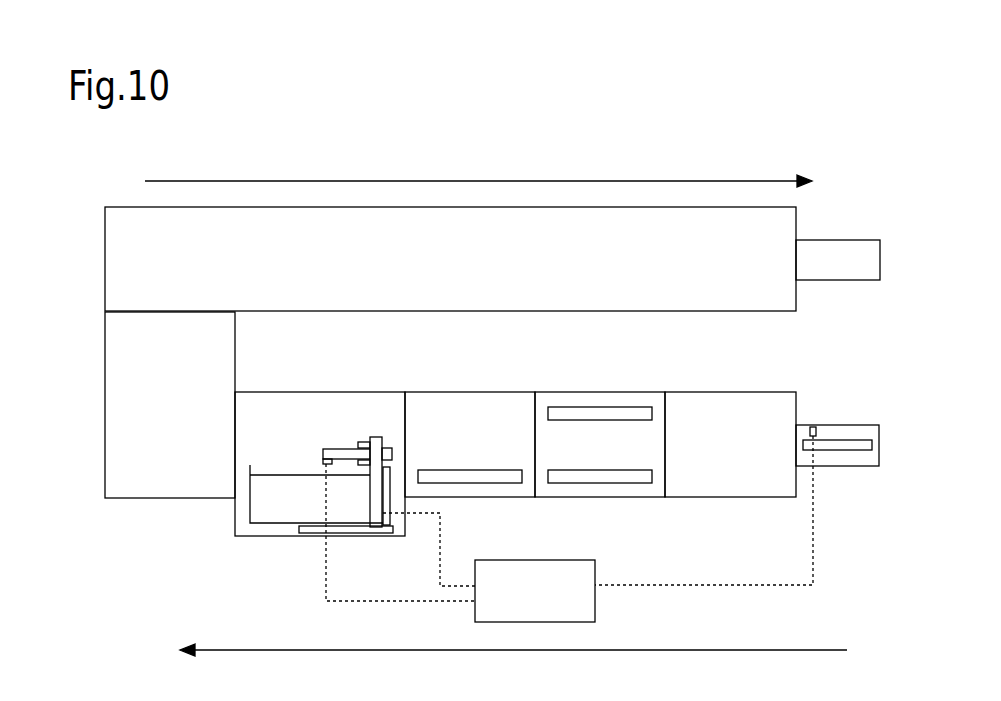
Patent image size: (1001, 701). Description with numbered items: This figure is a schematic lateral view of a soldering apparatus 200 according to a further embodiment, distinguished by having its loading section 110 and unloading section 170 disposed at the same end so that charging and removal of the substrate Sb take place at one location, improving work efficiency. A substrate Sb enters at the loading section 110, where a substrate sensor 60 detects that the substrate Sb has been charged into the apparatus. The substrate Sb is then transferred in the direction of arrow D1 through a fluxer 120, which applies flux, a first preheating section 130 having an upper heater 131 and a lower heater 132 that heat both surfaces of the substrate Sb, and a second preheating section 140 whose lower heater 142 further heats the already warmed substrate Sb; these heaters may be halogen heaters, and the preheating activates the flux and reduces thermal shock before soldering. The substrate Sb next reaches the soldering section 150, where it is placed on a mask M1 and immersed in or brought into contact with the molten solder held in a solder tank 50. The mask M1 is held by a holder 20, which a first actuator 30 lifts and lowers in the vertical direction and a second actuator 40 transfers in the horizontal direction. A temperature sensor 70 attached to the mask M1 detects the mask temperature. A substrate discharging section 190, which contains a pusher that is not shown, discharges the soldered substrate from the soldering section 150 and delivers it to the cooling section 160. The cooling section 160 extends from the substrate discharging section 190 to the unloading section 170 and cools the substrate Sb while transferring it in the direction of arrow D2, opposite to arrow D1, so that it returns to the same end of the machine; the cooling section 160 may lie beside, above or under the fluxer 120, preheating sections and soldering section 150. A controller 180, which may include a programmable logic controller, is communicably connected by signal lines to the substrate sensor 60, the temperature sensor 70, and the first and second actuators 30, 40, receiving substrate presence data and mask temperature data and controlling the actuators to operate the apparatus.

The soldering apparatus 200 is at (795, 147).
The cooling section 160 is at (105, 257).
The unloading section 170 is at (835, 240).
The substrate discharging section 190 is at (105, 436).
The soldering section 150 is at (318, 392).
The second preheating section 140 is at (467, 392).
The first preheating section 130 is at (597, 392).
The fluxer 120 is at (728, 392).
The upper heater 131 is at (640, 413).
The lower heater 132 is at (642, 482).
The lower heater 142 is at (510, 482).
The loading section 110 is at (835, 425).
The substrate sensor 60 is at (813, 427).
The controller 180 is at (597, 612).
The holder 20 is at (372, 437).
The mask M1 is at (338, 449).
The temperature sensor 70 is at (322, 460).
The solder tank 50 is at (268, 512).
The first actuator 30 is at (377, 518).
The second actuator 40 is at (307, 533).
The substrate Sb is at (872, 445).
The substrate transfer direction D1 is at (837, 649).
The cooling transfer direction D2 is at (145, 181).